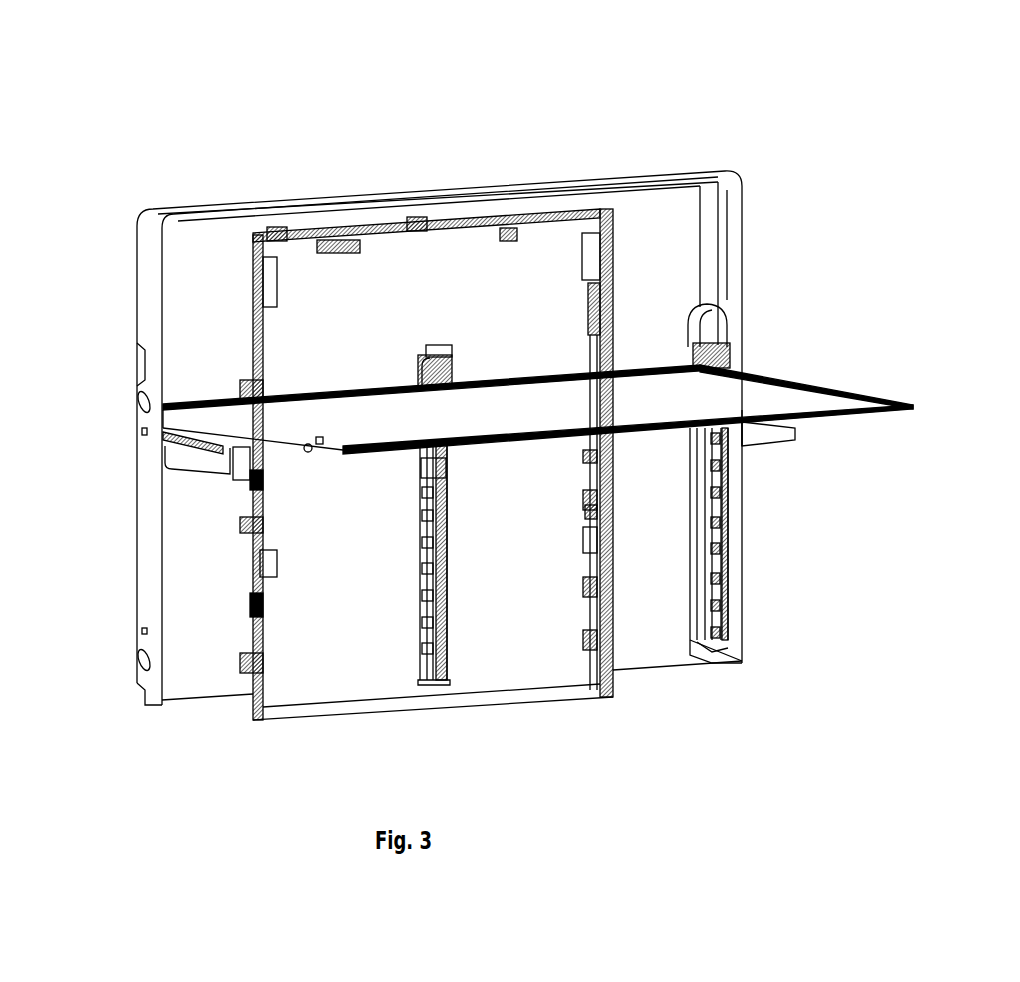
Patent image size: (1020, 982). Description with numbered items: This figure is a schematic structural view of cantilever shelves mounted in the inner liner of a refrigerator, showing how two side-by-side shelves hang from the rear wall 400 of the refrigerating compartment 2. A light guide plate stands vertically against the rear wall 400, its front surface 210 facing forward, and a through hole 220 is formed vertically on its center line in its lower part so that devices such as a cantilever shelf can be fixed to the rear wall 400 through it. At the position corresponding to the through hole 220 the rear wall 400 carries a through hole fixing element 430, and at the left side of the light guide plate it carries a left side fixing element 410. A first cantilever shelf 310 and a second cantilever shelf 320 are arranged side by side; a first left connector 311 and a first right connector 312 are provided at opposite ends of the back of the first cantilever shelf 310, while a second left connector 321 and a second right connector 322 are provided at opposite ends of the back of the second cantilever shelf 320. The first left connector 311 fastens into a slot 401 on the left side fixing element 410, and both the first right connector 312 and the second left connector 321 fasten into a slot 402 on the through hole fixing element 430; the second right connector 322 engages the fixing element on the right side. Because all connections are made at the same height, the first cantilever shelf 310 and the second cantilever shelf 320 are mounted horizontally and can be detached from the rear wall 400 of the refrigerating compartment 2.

The refrigerating compartment 2 is at (273, 146).
The rear wall 400 is at (200, 287).
The left side fixing element 410 is at (740, 323).
The slot 401 is at (723, 527).
The slot 402 is at (440, 540).
The front surface 210 is at (305, 330).
The through hole 220 is at (432, 345).
The through hole fixing element 430 is at (440, 360).
The first cantilever shelf 310 is at (340, 427).
The second cantilever shelf 320 is at (737, 400).
The first left connector 311 is at (163, 446).
The first right connector 312 is at (427, 473).
The second left connector 321 is at (613, 513).
The second right connector 322 is at (768, 432).